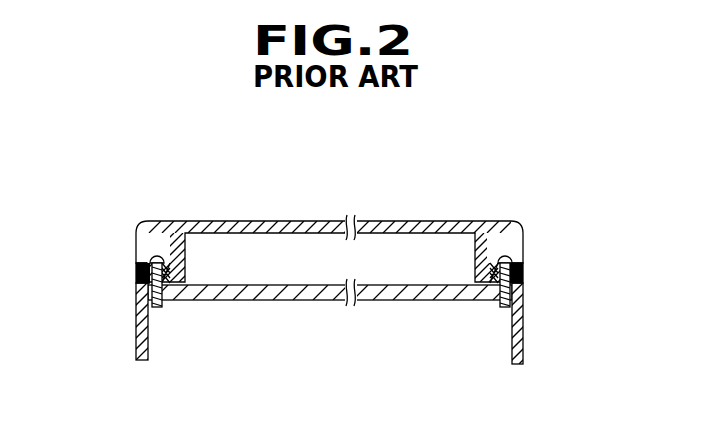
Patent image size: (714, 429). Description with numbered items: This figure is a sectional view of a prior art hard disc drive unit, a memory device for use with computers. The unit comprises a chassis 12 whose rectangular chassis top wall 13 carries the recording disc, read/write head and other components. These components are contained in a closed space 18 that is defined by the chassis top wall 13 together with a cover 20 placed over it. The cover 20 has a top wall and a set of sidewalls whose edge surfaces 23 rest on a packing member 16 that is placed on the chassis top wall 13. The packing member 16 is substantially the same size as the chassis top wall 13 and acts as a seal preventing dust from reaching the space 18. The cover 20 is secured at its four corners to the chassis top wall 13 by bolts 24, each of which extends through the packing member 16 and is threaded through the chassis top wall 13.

The chassis 12 is at (272, 301).
The chassis top wall 13 is at (148, 294).
The packing member 16 is at (137, 275).
The closed space 18 is at (337, 238).
The cover 20 is at (271, 219).
The edge surfaces 23 is at (137, 273).
The bolts 24 is at (157, 252).